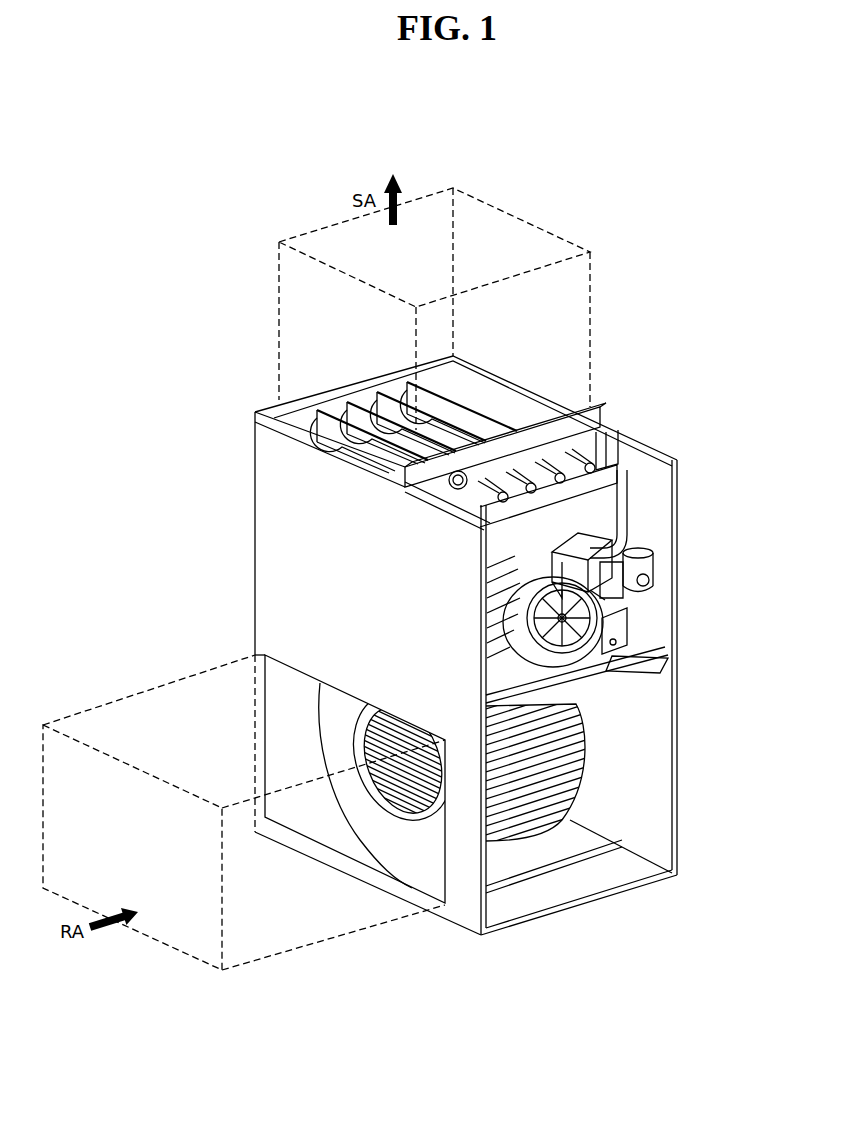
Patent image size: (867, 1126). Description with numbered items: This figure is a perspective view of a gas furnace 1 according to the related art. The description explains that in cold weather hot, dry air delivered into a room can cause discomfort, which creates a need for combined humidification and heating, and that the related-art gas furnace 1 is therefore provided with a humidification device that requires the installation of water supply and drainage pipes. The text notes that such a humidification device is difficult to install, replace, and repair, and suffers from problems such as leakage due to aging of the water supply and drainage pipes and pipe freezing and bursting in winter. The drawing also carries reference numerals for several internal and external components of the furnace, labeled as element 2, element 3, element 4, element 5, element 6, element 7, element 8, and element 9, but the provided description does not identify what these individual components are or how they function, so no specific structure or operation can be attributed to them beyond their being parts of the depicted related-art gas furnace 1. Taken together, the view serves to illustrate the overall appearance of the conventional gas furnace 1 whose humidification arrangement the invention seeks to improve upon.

The gas furnace 1 is at (424, 535).
The gas valve 2 is at (607, 537).
The burner 3 is at (612, 473).
The gas manifold 4 is at (590, 436).
The heat exchanger 5 is at (340, 437).
The blower 6 is at (423, 835).
The inducer fan 7 is at (615, 648).
The inducer motor 8 is at (647, 578).
The controller 9 is at (627, 620).